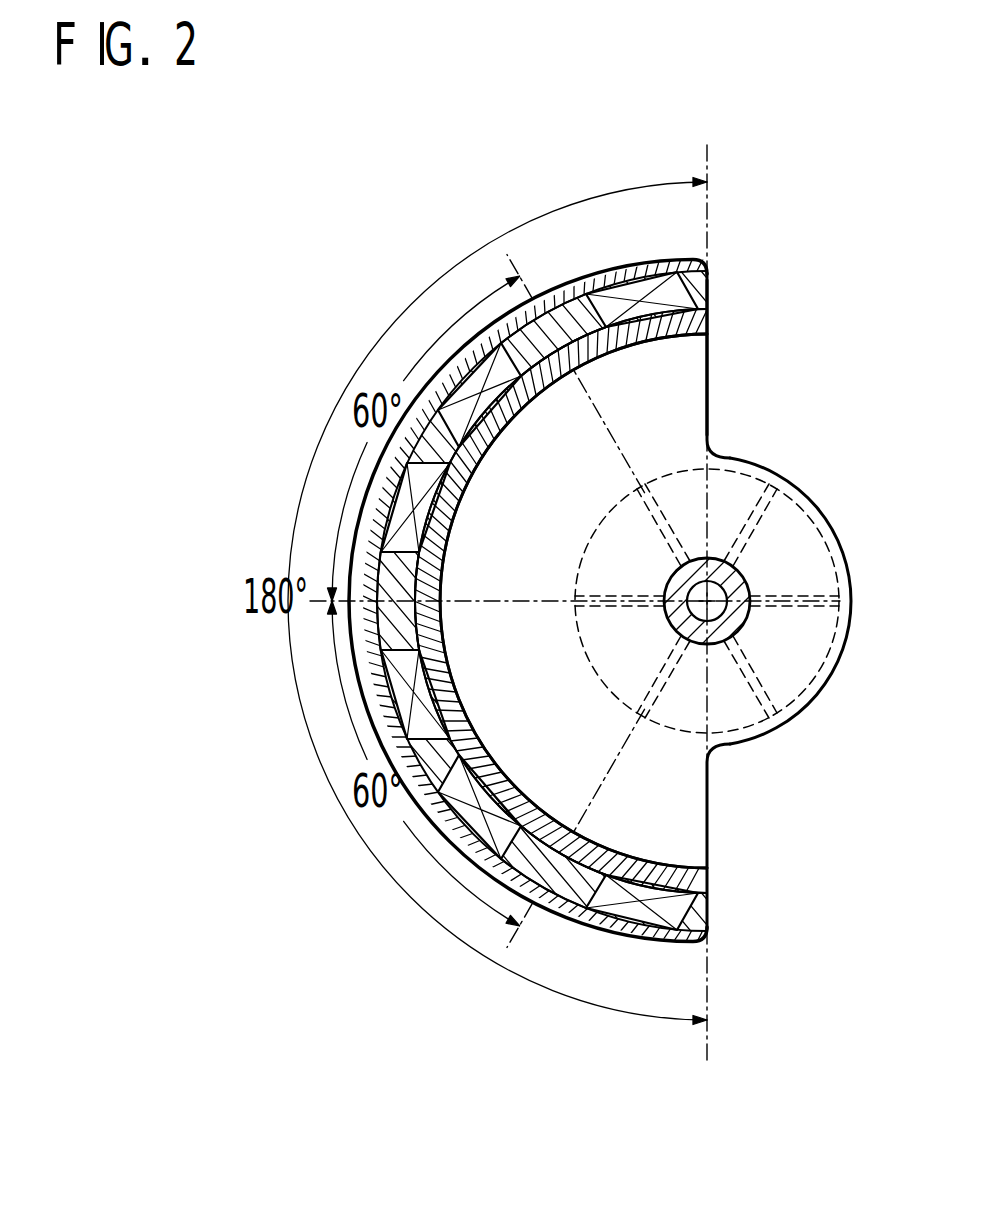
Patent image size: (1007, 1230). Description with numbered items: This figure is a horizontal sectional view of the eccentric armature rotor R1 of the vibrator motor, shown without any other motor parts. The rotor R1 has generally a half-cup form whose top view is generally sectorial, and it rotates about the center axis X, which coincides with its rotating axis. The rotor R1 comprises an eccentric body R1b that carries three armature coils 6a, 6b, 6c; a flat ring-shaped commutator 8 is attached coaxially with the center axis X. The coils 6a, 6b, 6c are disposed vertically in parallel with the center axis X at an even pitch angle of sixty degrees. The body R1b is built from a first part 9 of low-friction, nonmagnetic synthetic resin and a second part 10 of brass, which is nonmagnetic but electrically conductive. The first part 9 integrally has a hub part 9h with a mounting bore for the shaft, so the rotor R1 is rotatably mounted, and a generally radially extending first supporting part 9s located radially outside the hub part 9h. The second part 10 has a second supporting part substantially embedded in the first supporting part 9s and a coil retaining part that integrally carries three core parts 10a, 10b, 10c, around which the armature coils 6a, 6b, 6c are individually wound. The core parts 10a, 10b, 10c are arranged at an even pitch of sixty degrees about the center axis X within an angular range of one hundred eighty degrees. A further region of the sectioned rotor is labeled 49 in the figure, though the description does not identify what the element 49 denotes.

The armature coil 6a is at (475, 378).
The armature coil 6b is at (397, 698).
The armature coil 6c is at (633, 917).
The core part 10a is at (568, 318).
The core part 10b is at (395, 612).
The core part 10c is at (535, 853).
The commutator 8 is at (798, 558).
The first part 9 is at (567, 840).
The hub part 9h is at (723, 573).
The first supporting part 9s is at (678, 797).
The second part 10 is at (660, 877).
The cutout portion 49 is at (672, 383).
The center axis X is at (712, 604).
The eccentric armature rotor R1 is at (716, 341).
The eccentric body R1b is at (722, 425).